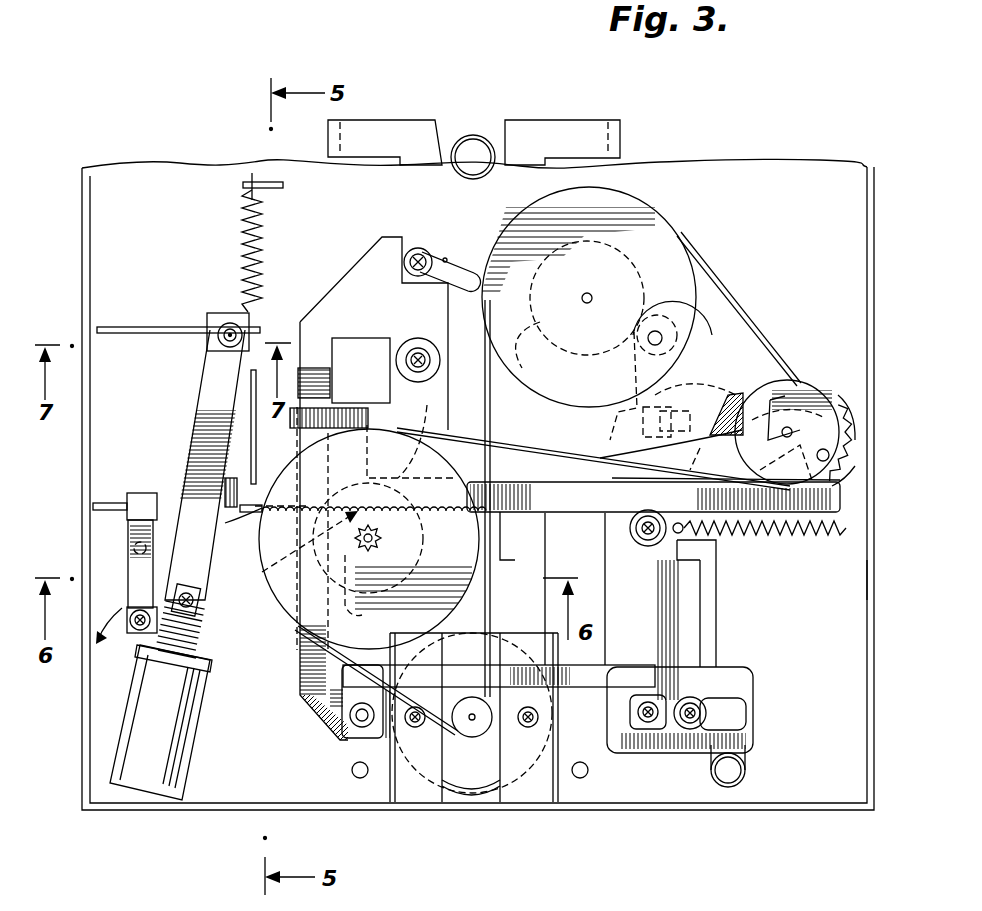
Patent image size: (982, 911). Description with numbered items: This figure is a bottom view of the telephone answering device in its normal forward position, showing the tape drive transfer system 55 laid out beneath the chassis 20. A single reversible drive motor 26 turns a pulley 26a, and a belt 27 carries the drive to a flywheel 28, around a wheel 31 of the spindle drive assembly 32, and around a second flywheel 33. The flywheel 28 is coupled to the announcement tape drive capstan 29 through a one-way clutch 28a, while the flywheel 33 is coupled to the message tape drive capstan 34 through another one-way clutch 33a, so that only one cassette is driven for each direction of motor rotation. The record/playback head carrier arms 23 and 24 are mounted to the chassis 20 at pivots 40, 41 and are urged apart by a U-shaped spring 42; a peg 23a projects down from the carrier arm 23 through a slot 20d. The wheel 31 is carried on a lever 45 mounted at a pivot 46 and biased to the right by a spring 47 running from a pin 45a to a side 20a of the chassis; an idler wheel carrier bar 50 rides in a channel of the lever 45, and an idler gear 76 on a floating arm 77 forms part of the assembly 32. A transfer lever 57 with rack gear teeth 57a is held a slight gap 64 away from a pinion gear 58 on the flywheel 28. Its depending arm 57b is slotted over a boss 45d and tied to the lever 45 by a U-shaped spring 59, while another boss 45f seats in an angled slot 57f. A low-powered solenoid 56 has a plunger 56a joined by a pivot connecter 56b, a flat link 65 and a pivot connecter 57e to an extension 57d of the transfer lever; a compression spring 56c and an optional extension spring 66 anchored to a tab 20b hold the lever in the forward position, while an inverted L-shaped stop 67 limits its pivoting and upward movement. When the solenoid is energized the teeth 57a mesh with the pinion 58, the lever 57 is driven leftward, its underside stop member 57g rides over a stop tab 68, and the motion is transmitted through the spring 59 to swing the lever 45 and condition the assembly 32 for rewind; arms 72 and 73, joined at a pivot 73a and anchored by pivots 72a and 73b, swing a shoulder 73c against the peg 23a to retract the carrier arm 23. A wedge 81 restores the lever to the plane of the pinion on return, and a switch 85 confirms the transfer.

The chassis 20 is at (878, 174).
The side of the chassis 20a is at (874, 568).
The tab 20b is at (252, 162).
The slot 20d is at (446, 257).
The record/playback head carrier arm 23 is at (387, 120).
The peg 23a is at (426, 246).
The record/playback head carrier arm 24 is at (571, 118).
The drive motor 26 is at (470, 796).
The pulley 26a is at (466, 730).
The belt 27 is at (502, 522).
The flywheel 28 is at (446, 467).
The one-way clutch 28a is at (370, 493).
The tape drive capstan 29 is at (380, 540).
The wheel 31 is at (780, 386).
The spindle drive assembly 32 is at (838, 390).
The flywheel 33 is at (648, 218).
The one-way clutch 33a is at (516, 352).
The tape drive capstan 34 is at (596, 272).
The pivot 40 is at (360, 780).
The pivot 41 is at (579, 780).
The U-shaped spring 42 is at (486, 134).
The lever 45 is at (650, 418).
The pin 45a is at (712, 582).
The boss 45d is at (690, 732).
The boss 45f is at (640, 538).
The pivot 46 is at (697, 332).
The spring 47 is at (800, 540).
The idler wheel carrier bar 50 is at (738, 424).
The tape drive transfer system 55 is at (752, 617).
The solenoid 56 is at (148, 784).
The plunger 56a is at (205, 626).
The pivot connecter 56b is at (201, 598).
The compression spring 56c is at (205, 652).
The transfer lever 57 is at (534, 478).
The rack gear teeth 57a is at (500, 516).
The depending arm 57b is at (742, 706).
The extension 57d is at (228, 320).
The pivot connecter 57e is at (222, 340).
The angled slot 57f is at (616, 470).
The stop member 57g is at (268, 536).
The pinion gear 58 is at (345, 604).
The spring 59 is at (746, 772).
The gap 64 is at (290, 572).
The link 65 is at (198, 440).
The extension spring 66 is at (260, 232).
The stop 67 is at (253, 415).
The stop tab 68 is at (205, 546).
The arm 72 is at (522, 672).
The pivot 72a is at (638, 712).
The arm 73 is at (362, 278).
The pivot 73a is at (351, 722).
The pivot 73b is at (406, 360).
The shoulder 73c is at (412, 246).
The idler gear 76 is at (849, 438).
The floating arm 77 is at (836, 462).
The wedge 81 is at (138, 325).
The switch 85 is at (145, 494).